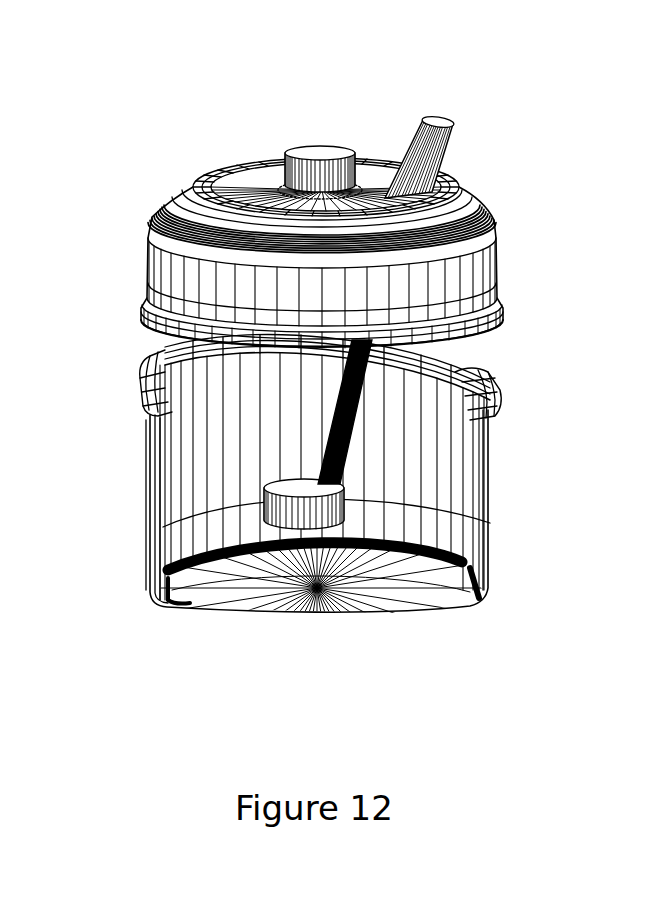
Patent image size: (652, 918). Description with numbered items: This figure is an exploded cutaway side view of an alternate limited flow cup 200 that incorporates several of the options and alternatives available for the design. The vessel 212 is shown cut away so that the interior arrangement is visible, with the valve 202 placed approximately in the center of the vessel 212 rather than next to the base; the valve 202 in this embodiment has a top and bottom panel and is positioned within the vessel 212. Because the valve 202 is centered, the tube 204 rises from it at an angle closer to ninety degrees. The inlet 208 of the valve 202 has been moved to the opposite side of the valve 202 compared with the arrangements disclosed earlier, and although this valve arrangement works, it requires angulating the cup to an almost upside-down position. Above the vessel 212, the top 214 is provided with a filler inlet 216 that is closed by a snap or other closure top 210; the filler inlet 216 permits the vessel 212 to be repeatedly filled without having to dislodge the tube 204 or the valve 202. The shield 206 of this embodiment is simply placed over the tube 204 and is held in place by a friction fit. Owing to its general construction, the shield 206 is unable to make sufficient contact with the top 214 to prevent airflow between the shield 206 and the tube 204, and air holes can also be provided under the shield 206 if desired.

The limited flow cup 200 is at (493, 288).
The valve 202 is at (392, 612).
The tube 204 is at (368, 427).
The shield 206 is at (462, 122).
The inlet 208 is at (278, 525).
The closure top 210 is at (302, 167).
The vessel 212 is at (143, 452).
The top 214 is at (190, 184).
The filler inlet 216 is at (280, 156).